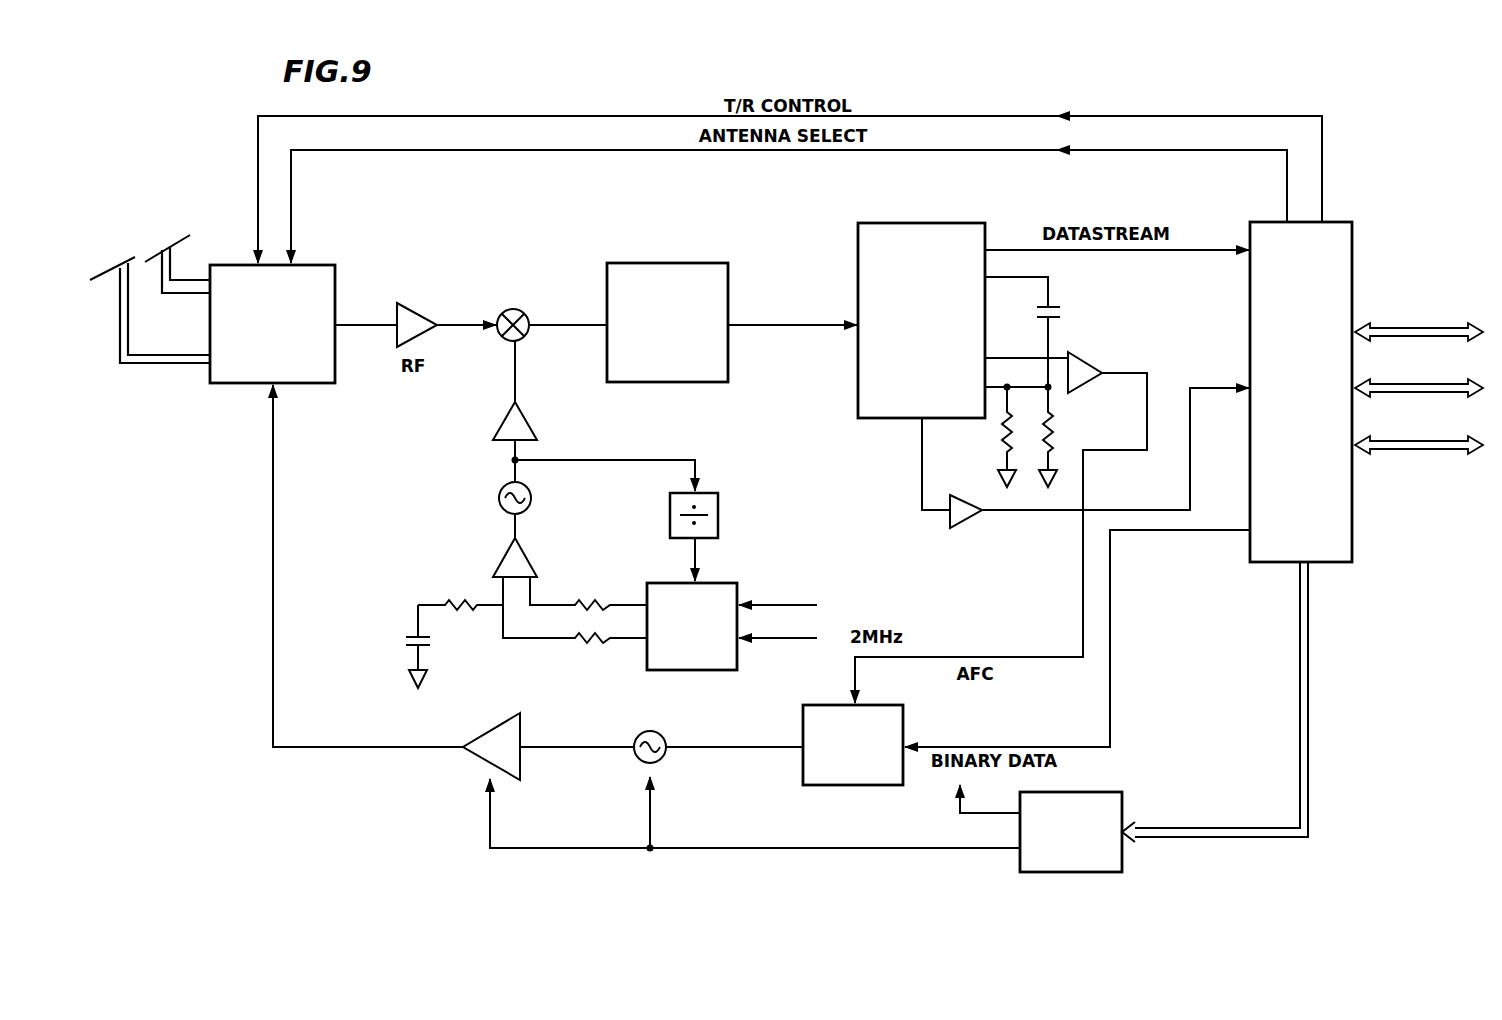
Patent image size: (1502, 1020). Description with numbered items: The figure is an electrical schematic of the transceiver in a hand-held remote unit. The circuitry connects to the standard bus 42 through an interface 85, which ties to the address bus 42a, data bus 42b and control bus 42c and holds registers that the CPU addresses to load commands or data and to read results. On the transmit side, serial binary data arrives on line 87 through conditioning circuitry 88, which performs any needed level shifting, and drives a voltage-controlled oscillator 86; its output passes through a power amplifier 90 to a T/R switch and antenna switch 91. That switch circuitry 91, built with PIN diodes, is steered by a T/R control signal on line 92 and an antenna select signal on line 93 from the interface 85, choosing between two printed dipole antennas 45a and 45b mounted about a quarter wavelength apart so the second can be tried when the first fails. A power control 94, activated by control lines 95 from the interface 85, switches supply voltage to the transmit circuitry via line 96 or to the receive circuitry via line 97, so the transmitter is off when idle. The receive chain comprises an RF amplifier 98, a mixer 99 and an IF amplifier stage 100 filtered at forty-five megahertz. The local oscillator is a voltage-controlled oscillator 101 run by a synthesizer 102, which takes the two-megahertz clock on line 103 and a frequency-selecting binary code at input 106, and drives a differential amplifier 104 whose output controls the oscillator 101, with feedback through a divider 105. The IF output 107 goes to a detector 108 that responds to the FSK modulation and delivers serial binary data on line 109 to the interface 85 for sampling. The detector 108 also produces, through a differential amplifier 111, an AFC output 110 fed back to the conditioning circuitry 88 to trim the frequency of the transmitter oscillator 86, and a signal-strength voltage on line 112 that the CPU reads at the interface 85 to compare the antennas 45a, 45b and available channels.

The printed dipole antenna 45a is at (172, 245).
The printed dipole antenna 45b is at (128, 258).
The T/R switch and antenna switch 91 is at (236, 383).
The T/R control line 92 is at (538, 116).
The antenna select line 93 is at (538, 150).
The RF amplifier 98 is at (418, 314).
The mixer 99 is at (518, 312).
The IF amplifier stage 100 is at (665, 263).
The output of the IF stage 107 is at (778, 325).
The detector 108 is at (876, 418).
The serial binary data output line 109 is at (1013, 250).
The differential amplifier 111 is at (1090, 356).
The AFC output line 110 is at (1083, 578).
The signal strength line 112 is at (988, 510).
The interface 85 is at (1336, 562).
The address bus 42a is at (1397, 328).
The data bus 42b is at (1397, 384).
The control bus 42c is at (1397, 441).
The bus 42 is at (1422, 464).
The voltage-controlled oscillator 101 is at (499, 498).
The differential amplifier 104 is at (500, 560).
The divider 105 is at (718, 515).
The synthesizer 102 is at (715, 583).
The synthesizer input 106 is at (780, 605).
The 2-MHz clock line 103 is at (780, 638).
The conditioning circuitry 88 is at (848, 785).
The serial binary data line 87 is at (997, 747).
The voltage-controlled oscillator 86 is at (665, 737).
The power amplifier 90 is at (475, 754).
The transmit supply line 96 is at (827, 847).
The receive supply line 97 is at (960, 815).
The power control 94 is at (1070, 792).
The control lines 95 is at (1308, 728).